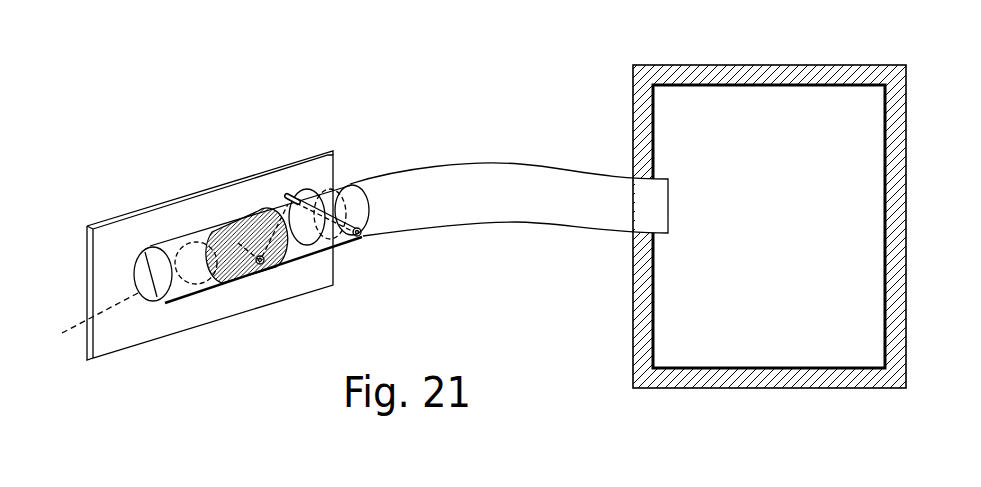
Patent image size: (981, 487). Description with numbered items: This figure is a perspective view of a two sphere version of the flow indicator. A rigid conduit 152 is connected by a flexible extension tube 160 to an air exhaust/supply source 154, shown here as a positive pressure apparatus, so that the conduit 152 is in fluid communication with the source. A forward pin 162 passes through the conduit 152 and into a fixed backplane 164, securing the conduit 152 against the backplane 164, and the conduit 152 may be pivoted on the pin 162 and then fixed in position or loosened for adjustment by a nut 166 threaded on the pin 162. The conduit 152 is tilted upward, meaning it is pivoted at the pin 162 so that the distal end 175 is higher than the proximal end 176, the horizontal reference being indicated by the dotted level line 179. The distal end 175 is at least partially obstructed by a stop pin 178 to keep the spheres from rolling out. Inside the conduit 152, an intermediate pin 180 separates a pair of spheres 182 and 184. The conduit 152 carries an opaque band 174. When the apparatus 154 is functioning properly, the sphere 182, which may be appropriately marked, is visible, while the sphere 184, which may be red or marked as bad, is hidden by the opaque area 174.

The air exhaust/supply source 154 is at (673, 286).
The extension tube 160 is at (545, 165).
The backplane 164 is at (133, 230).
The level line 179 is at (68, 323).
The conduit 152 is at (180, 237).
The stop pin 178 is at (155, 302).
The distal end 175 is at (178, 290).
The sphere 182 is at (203, 283).
The opaque band 174 is at (233, 280).
The forward pin 162 is at (327, 210).
The proximal end 176 is at (368, 207).
The sphere 184 is at (284, 208).
The intermediate pin 180 is at (266, 265).
The nut 166 is at (363, 237).